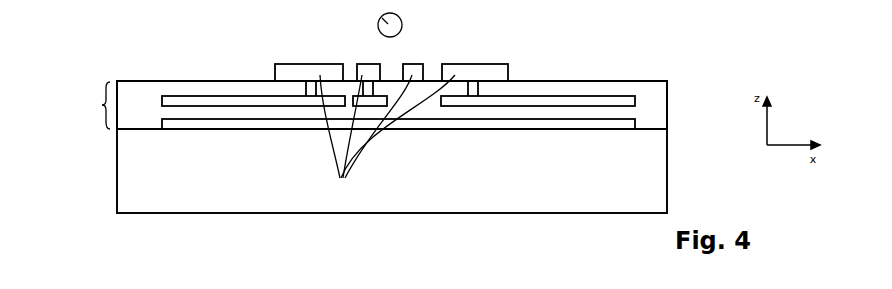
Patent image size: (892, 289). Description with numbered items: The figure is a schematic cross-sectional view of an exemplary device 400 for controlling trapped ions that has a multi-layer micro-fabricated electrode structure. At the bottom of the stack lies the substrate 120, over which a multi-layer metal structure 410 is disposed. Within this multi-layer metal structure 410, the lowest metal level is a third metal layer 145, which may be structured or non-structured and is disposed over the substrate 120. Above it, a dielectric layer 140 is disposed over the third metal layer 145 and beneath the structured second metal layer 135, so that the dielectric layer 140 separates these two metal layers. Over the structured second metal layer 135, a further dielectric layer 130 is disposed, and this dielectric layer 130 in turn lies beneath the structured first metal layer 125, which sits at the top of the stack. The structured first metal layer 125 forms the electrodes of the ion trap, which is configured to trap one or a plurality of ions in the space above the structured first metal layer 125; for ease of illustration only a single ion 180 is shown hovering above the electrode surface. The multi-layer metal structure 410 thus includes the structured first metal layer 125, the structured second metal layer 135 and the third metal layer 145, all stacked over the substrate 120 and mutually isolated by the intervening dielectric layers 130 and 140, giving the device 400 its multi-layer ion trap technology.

The substrate 120 is at (130, 148).
The structured first metal layer 125 is at (387, 139).
The dielectric layer 130 is at (259, 88).
The structured second metal layer 135 is at (210, 100).
The dielectric layer 140 is at (220, 116).
The third metal layer 145 is at (270, 124).
The ion 180 is at (378, 28).
The device for controlling trapped ions 400 is at (583, 42).
The multi-layer metal structure 410 is at (366, 105).